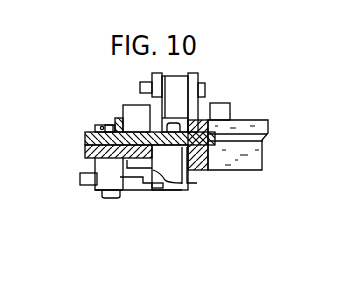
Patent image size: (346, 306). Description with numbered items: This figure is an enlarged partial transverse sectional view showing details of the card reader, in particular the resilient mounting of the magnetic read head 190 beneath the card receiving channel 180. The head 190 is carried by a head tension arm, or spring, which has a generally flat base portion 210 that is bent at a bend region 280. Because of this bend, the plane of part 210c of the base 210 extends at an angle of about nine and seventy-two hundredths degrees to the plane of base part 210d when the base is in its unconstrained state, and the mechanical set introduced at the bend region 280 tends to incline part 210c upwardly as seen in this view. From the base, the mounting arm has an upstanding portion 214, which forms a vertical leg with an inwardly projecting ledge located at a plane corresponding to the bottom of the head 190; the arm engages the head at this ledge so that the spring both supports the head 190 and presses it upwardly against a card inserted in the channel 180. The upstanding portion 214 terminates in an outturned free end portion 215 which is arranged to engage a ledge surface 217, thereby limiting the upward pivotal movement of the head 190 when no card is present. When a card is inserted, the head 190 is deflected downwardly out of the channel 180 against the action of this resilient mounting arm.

The channel 180 is at (139, 141).
The read head 190 is at (194, 179).
The base portion 210 is at (95, 192).
The part of base 210c is at (97, 166).
The base part 210d is at (133, 190).
The upstanding portion 214 is at (181, 184).
The outturned free end portion 215 is at (194, 168).
The ledge surface 217 is at (187, 128).
The bend region 280 is at (145, 193).